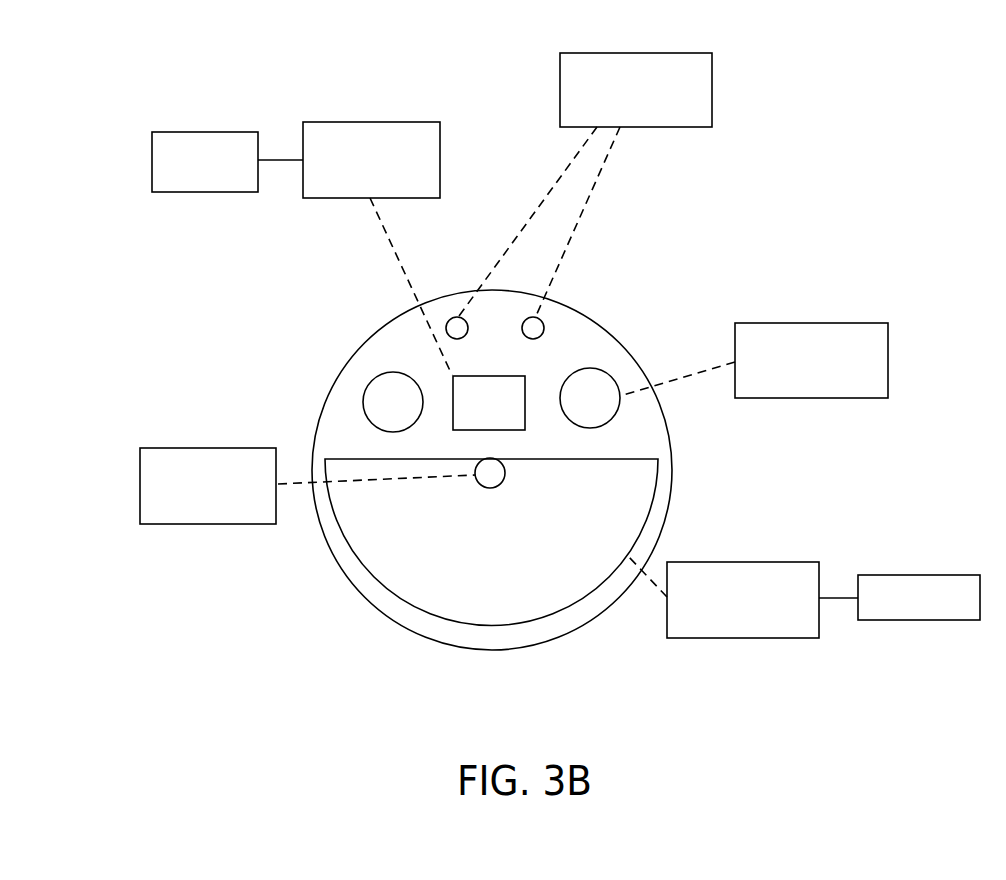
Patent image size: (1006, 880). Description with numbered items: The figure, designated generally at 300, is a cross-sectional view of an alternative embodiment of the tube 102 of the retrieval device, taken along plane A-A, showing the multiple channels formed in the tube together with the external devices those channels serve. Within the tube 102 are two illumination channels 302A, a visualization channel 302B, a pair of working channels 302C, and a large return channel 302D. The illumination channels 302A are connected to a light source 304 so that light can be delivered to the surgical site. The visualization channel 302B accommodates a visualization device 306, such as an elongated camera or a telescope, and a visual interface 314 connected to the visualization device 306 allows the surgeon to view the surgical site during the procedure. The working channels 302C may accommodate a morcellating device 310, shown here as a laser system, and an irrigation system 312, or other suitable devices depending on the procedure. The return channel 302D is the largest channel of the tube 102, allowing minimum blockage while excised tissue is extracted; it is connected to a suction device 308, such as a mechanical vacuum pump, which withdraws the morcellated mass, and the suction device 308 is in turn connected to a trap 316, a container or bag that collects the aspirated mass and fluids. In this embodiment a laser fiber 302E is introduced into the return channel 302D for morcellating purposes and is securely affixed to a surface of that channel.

The surgical system 300 is at (858, 160).
The tube 102 is at (358, 333).
The illumination channels 302A is at (459, 317).
The visualization channel 302B is at (525, 376).
The working channel 302C is at (363, 400).
The return channel 302D is at (628, 553).
The laser fiber 302E is at (505, 470).
The light source 304 is at (712, 93).
The visualization device 306 is at (440, 122).
The suction device 308 is at (740, 568).
The morcellating device 310 is at (207, 448).
The irrigation system 312 is at (810, 328).
The visual interface 314 is at (150, 130).
The trap 316 is at (920, 575).